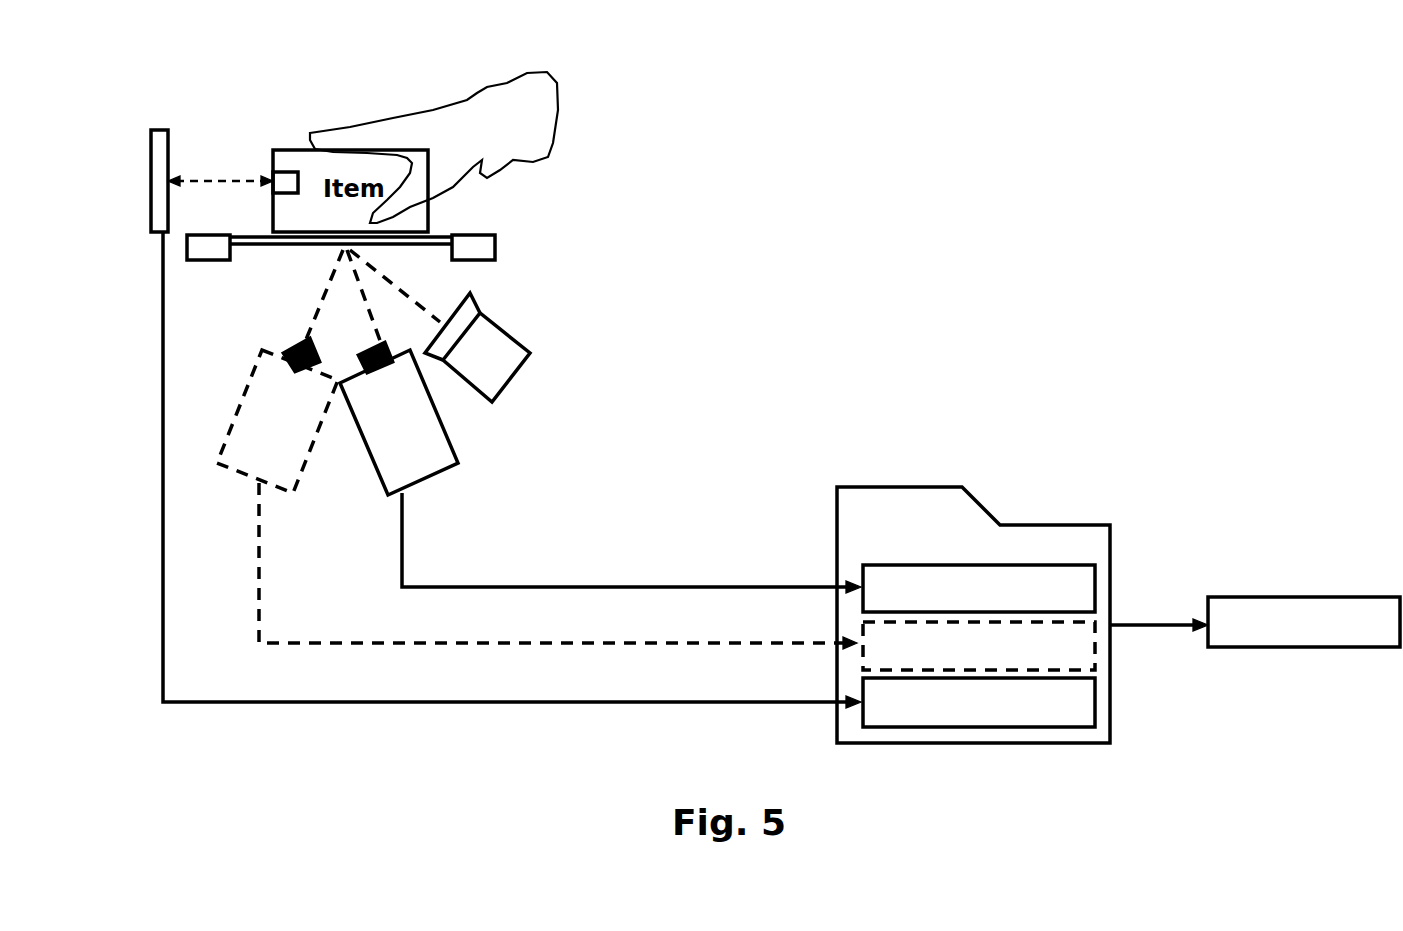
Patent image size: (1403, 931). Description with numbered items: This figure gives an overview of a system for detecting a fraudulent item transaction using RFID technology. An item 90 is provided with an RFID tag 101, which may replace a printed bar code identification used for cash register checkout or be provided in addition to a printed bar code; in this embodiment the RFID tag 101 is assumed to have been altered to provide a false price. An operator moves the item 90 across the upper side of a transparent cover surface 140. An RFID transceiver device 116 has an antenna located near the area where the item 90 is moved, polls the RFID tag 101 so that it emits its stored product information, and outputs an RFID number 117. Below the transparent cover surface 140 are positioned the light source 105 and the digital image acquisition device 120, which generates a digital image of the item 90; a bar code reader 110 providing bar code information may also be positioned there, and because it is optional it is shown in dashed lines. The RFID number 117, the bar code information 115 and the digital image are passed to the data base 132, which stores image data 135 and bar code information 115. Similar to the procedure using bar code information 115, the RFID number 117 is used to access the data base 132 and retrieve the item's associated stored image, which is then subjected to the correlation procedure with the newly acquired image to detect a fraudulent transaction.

The item 90 is at (308, 150).
The RFID tag 101 is at (283, 170).
The RFID transceiver device 116 is at (153, 183).
The transparent cover surface 140 is at (282, 242).
The light source 105 is at (510, 335).
The digital image acquisition device 120 is at (428, 477).
The bar code reader 110 is at (308, 450).
The image data 135 is at (1035, 565).
The data base 132 is at (1291, 597).
The bar code information 115 is at (1095, 655).
The RFID number 117 is at (1095, 703).